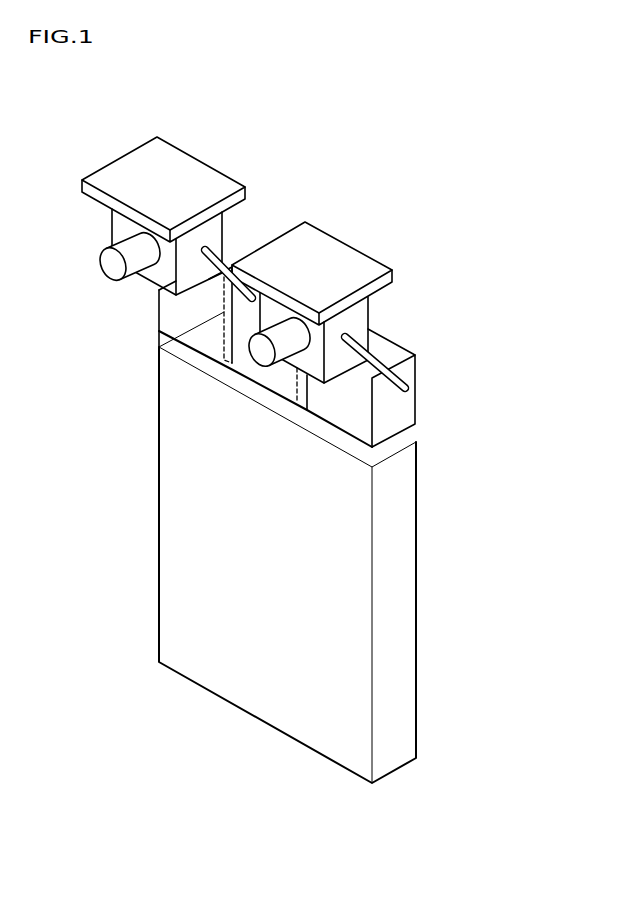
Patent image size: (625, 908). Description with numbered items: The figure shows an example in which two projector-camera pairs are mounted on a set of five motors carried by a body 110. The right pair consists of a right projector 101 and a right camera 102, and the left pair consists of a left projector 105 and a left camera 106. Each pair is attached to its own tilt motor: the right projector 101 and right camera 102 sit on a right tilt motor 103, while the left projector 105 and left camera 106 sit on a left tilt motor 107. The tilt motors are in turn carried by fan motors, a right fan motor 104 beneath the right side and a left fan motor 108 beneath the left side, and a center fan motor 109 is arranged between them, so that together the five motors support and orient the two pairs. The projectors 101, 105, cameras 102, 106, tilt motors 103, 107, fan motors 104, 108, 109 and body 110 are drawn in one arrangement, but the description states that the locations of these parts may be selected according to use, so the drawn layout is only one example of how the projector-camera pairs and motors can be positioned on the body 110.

The right projector 101 is at (175, 178).
The right camera 102 is at (113, 263).
The right tilt motor 103 is at (122, 228).
The right fan motor 104 is at (182, 308).
The left projector 105 is at (326, 262).
The left camera 106 is at (260, 352).
The left tilt motor 107 is at (356, 315).
The left fan motor 108 is at (400, 407).
The center fan motor 109 is at (240, 342).
The body 110 is at (396, 590).